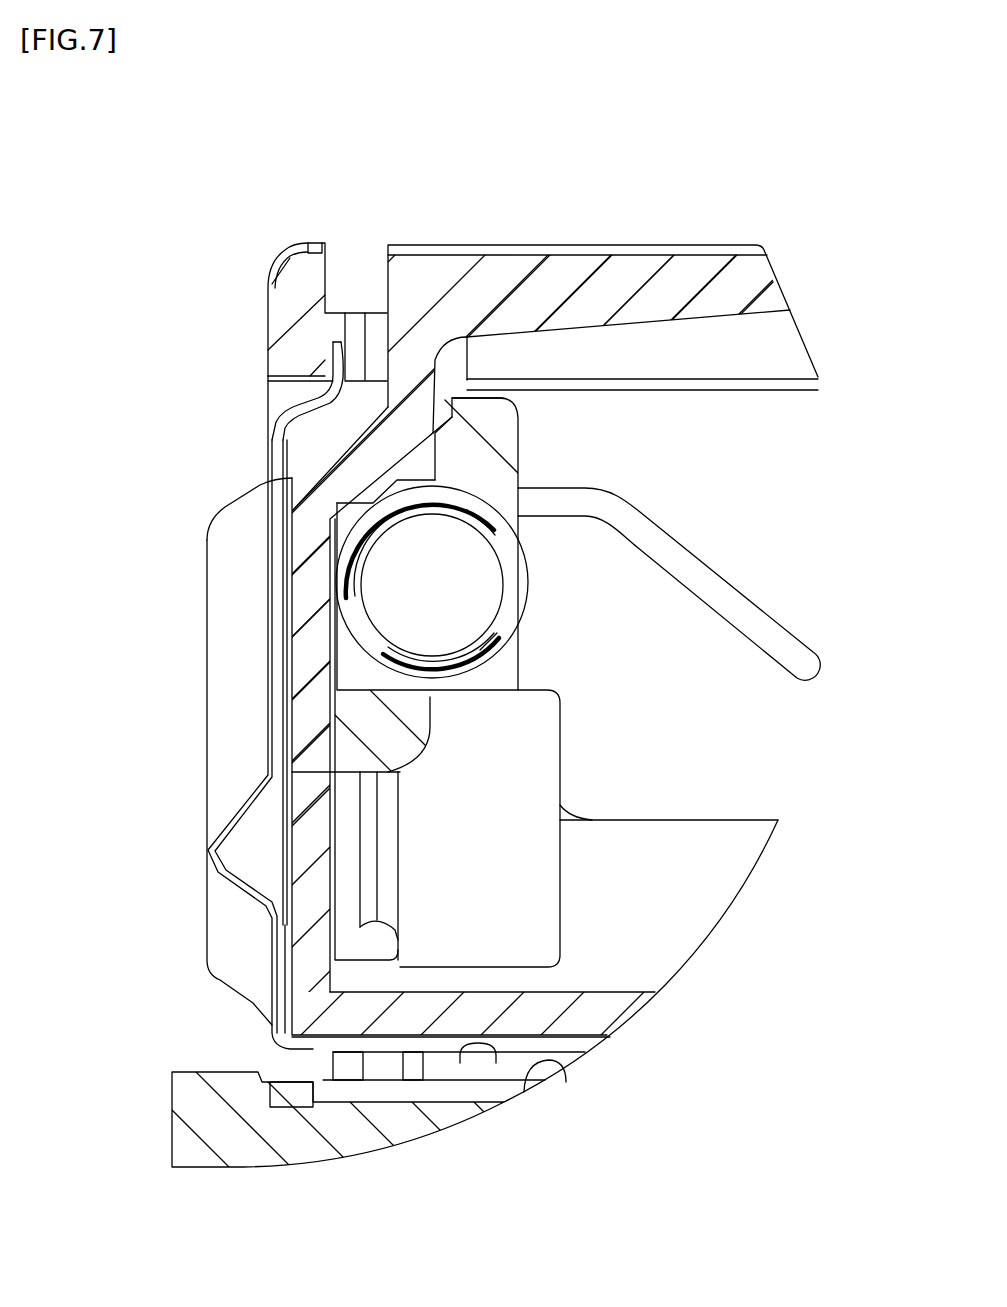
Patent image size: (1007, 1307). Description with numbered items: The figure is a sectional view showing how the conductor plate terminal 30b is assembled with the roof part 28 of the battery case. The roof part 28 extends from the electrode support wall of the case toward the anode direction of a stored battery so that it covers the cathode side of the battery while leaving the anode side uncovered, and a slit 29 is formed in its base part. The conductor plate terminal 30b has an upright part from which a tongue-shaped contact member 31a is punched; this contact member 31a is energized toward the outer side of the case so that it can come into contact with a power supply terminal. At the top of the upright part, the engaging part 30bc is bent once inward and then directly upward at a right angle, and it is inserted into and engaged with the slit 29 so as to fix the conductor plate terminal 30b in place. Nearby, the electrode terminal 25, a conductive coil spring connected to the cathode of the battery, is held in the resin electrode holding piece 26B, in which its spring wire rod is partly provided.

The electrode terminal 25 is at (513, 600).
The electrode holding piece 26B is at (500, 457).
The roof part 28 is at (708, 245).
The slit 29 is at (353, 255).
The conductor plate terminal 30b is at (270, 430).
The engaging part 30bc is at (312, 392).
The contact member 31a is at (262, 688).